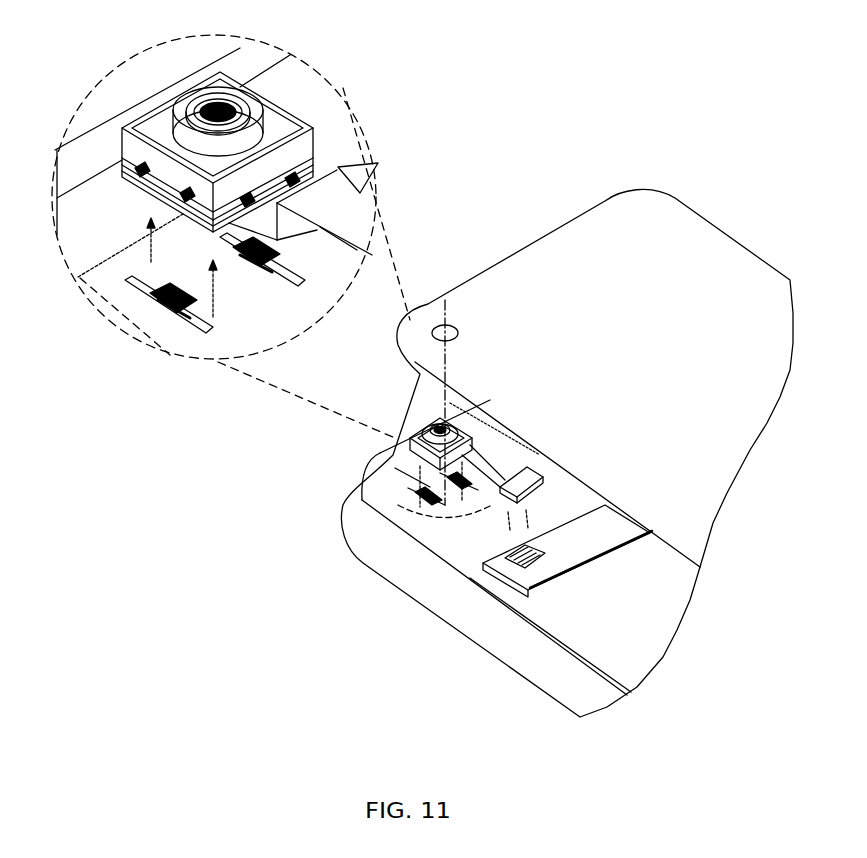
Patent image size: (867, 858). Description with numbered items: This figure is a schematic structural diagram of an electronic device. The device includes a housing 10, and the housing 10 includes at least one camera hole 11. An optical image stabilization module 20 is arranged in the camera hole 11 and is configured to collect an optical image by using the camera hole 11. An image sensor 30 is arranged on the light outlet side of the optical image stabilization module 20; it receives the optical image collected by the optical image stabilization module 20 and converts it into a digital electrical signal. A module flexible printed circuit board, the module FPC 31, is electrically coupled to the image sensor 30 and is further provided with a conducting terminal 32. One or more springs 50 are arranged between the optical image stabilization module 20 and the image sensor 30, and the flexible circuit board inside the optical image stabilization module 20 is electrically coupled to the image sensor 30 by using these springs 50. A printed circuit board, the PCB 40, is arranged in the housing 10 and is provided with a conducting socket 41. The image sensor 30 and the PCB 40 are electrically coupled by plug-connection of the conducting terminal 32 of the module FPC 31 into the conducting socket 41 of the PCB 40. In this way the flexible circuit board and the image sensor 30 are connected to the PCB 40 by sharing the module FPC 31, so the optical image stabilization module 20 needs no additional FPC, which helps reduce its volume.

The housing 10 is at (518, 275).
The camera hole 11 is at (437, 326).
The optical image stabilization module 20 is at (295, 124).
The image sensor 30 is at (137, 162).
The module flexible printed circuit board 31 is at (378, 163).
The conducting terminal 32 is at (508, 518).
The printed circuit board 40 is at (547, 577).
The conducting socket 41 is at (527, 565).
The springs 50 is at (188, 328).